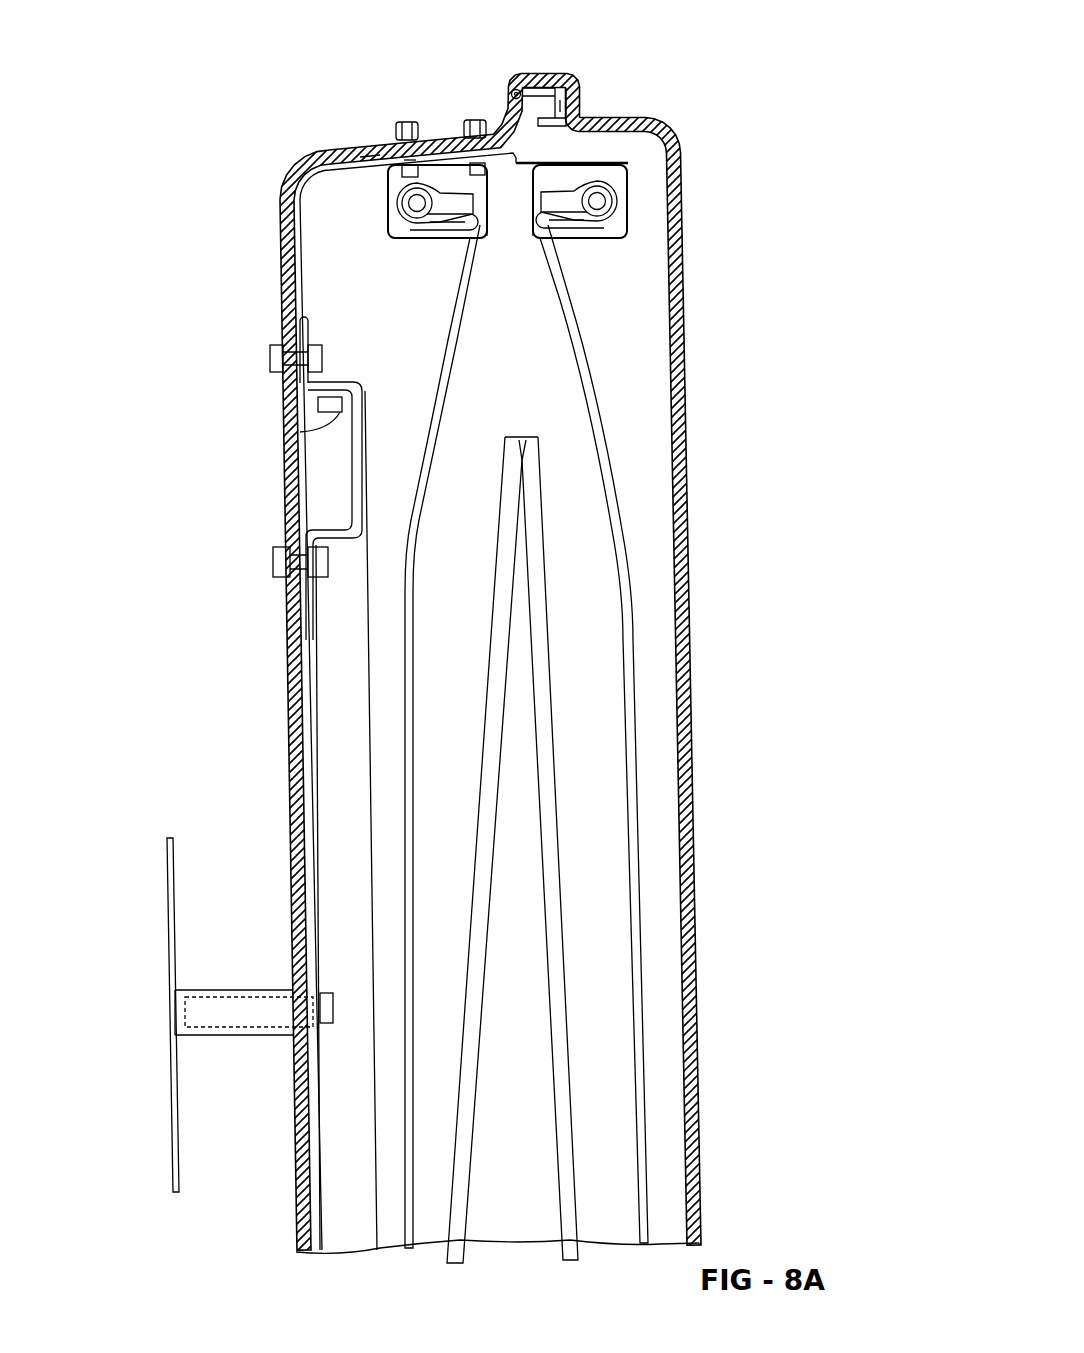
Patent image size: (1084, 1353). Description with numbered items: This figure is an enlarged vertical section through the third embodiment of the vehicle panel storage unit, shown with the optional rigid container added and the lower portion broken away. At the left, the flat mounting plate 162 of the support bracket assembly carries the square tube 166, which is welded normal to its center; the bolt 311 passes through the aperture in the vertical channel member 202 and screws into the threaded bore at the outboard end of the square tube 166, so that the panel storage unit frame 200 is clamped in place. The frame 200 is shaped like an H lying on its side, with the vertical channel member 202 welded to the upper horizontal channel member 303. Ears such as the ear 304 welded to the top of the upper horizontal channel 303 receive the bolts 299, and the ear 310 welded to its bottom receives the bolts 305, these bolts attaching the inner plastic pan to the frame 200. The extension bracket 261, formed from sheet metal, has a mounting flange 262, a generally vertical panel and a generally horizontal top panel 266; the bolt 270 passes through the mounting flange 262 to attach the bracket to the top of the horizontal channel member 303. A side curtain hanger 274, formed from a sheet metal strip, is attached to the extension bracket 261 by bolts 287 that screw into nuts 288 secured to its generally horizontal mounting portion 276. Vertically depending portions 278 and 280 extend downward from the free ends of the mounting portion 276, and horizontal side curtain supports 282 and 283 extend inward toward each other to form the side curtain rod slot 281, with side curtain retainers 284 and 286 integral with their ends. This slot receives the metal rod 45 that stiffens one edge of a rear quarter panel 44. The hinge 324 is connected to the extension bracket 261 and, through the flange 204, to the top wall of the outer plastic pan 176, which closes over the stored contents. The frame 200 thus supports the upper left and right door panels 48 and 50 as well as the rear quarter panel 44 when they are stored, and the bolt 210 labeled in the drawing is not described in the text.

The rear quarter panels 44 is at (406, 640).
The metal rod 45 is at (410, 204).
The upper left door panel 48 is at (575, 1213).
The upper right door panel 50 is at (450, 1248).
The mounting plate 162 is at (167, 864).
The square tube 166 is at (245, 990).
The outer plastic pan 176 is at (700, 710).
The panel storage unit frame 200 is at (393, 448).
The vertical channel member 202 is at (352, 1216).
The flange 204 is at (572, 30).
The bolt 210 is at (324, 1028).
The extension bracket 261 is at (310, 182).
The mounting flange 262 is at (352, 383).
The generally horizontal top panel 266 is at (373, 145).
The bolt 270 is at (318, 437).
The side curtain hanger 274 is at (585, 160).
The generally horizontal mounting portion 276 is at (602, 118).
The generally vertically depending portion 278 is at (388, 222).
The generally vertically depending portion 280 is at (627, 180).
The side curtain rod slot 281 is at (470, 265).
The horizontal side curtain support 282 is at (600, 258).
The horizontal side curtain support 283 is at (400, 252).
The side curtain retainer 284 is at (455, 232).
The side curtain retainer 286 is at (570, 250).
The bolts 287 is at (407, 122).
The nuts 288 is at (482, 236).
The bolts 299 is at (272, 358).
The upper horizontal channel member 303 is at (275, 515).
The ear 304 is at (300, 322).
The bolts 305 is at (272, 560).
The ear 310 is at (303, 578).
The bolt 311 is at (276, 1041).
The hinge 324 is at (512, 88).